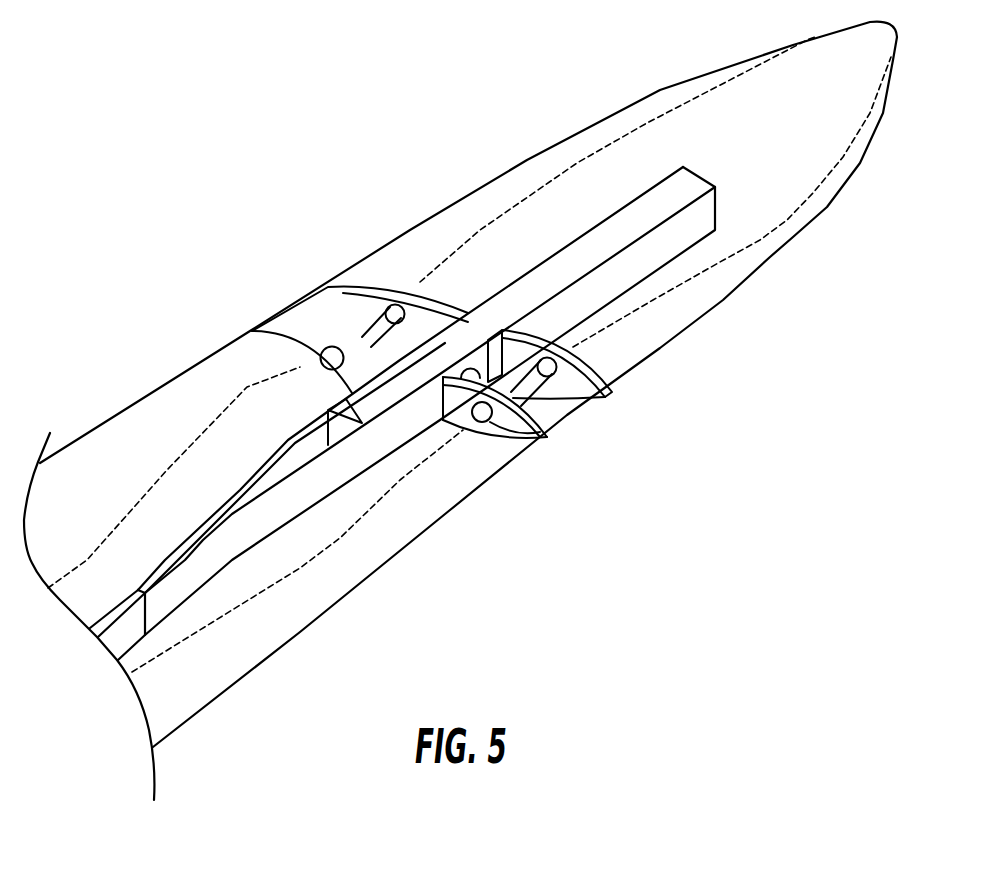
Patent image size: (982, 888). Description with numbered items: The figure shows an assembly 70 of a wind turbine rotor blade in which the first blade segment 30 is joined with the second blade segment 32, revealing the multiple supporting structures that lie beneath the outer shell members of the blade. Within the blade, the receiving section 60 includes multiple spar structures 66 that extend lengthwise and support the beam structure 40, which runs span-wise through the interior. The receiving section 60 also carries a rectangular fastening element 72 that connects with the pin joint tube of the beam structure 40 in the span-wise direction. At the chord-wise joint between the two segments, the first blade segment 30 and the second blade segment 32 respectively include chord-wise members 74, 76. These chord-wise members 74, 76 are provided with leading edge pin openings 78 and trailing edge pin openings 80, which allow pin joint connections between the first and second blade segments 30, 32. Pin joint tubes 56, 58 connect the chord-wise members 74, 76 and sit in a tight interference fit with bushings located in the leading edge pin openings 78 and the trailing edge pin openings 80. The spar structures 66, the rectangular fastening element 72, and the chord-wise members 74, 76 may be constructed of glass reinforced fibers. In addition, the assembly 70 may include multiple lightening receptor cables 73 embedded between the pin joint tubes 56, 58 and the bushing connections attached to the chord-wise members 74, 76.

The first blade segment 30 is at (660, 93).
The second blade segment 32 is at (92, 447).
The beam structure 40 is at (630, 230).
The pin joint tube 56 is at (542, 370).
The pin joint tube 58 is at (388, 320).
The receiving section 60 is at (434, 525).
The spar structures 66 is at (258, 467).
The assembly 70 is at (168, 170).
The rectangular fastening element 72 is at (322, 428).
The lightening receptor cables 73 is at (647, 120).
The chord-wise member 74 is at (597, 365).
The chord-wise member 76 is at (515, 446).
The leading edge pin openings 78 is at (537, 360).
The trailing edge pin openings 80 is at (315, 338).